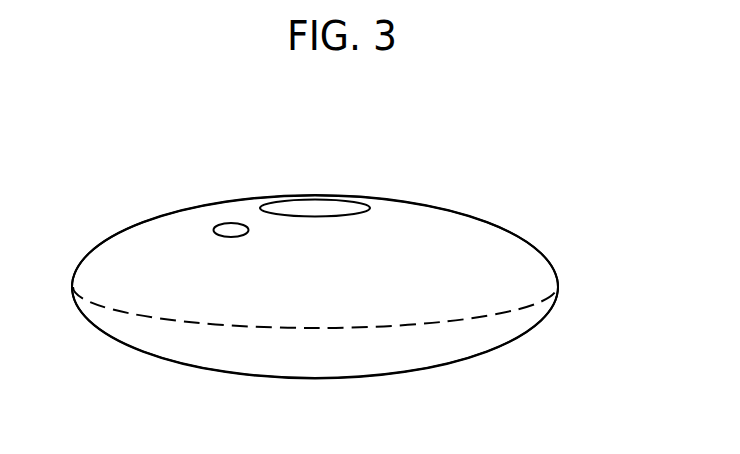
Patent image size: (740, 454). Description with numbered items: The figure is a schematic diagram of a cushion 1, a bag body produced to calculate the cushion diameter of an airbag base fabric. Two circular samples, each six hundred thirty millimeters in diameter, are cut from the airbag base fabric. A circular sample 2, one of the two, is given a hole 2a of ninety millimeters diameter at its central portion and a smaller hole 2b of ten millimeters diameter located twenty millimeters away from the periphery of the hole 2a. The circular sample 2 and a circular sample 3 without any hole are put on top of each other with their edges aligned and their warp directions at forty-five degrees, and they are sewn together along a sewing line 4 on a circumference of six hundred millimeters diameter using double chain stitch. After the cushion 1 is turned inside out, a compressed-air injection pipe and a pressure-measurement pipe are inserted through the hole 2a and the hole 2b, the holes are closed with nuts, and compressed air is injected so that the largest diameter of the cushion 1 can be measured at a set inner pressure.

The cushion 1 is at (555, 178).
The circular sample 2 is at (453, 233).
The hole 2a is at (317, 203).
The hole 2b is at (230, 228).
The circular sample 3 is at (495, 333).
The sewing line 4 is at (283, 328).